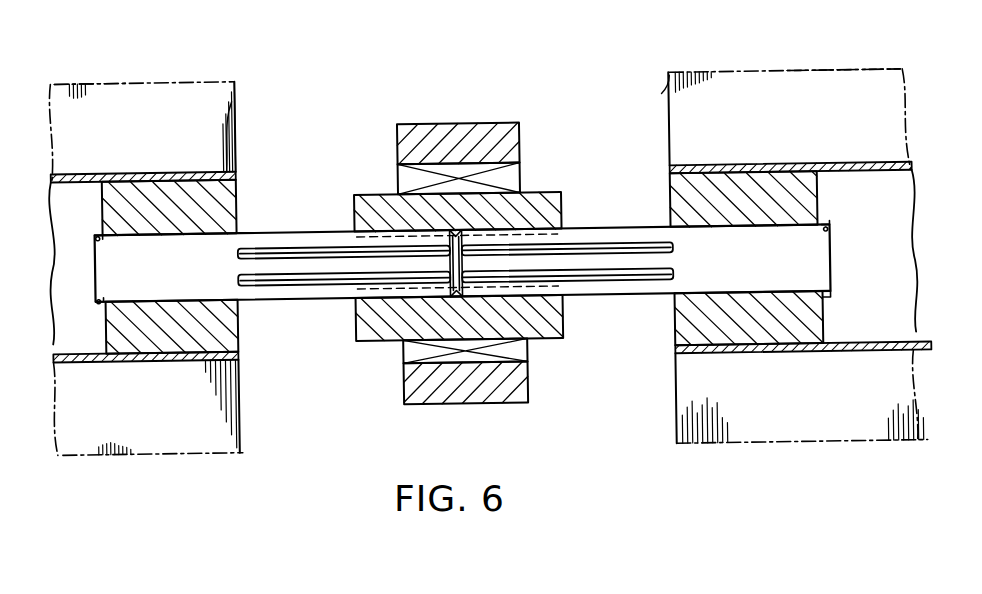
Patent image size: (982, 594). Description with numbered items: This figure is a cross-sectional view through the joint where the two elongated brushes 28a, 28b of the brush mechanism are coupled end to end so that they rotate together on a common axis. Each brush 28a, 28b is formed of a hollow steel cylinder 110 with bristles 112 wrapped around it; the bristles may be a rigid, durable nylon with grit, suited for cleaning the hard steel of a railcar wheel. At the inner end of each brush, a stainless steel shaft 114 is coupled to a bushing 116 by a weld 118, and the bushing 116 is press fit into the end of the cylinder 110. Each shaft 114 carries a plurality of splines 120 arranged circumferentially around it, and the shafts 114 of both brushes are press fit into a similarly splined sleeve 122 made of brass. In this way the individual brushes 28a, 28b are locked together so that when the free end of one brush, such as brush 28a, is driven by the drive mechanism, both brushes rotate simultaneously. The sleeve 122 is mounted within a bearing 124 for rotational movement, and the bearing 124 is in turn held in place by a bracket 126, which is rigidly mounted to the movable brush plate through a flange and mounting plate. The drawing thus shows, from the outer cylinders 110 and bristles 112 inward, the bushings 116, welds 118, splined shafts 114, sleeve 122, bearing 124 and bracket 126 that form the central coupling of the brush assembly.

The brush 28a is at (782, 75).
The brush 28b is at (138, 50).
The hollow steel cylinder 110 is at (200, 168).
The bristles 112 is at (230, 114).
The stainless steel shaft 114 is at (148, 282).
The bushing 116 is at (228, 335).
The weld 118 is at (101, 228).
The splines 120 is at (305, 275).
The splined sleeve 122 is at (528, 201).
The bearing 124 is at (407, 176).
The bracket 126 is at (411, 380).